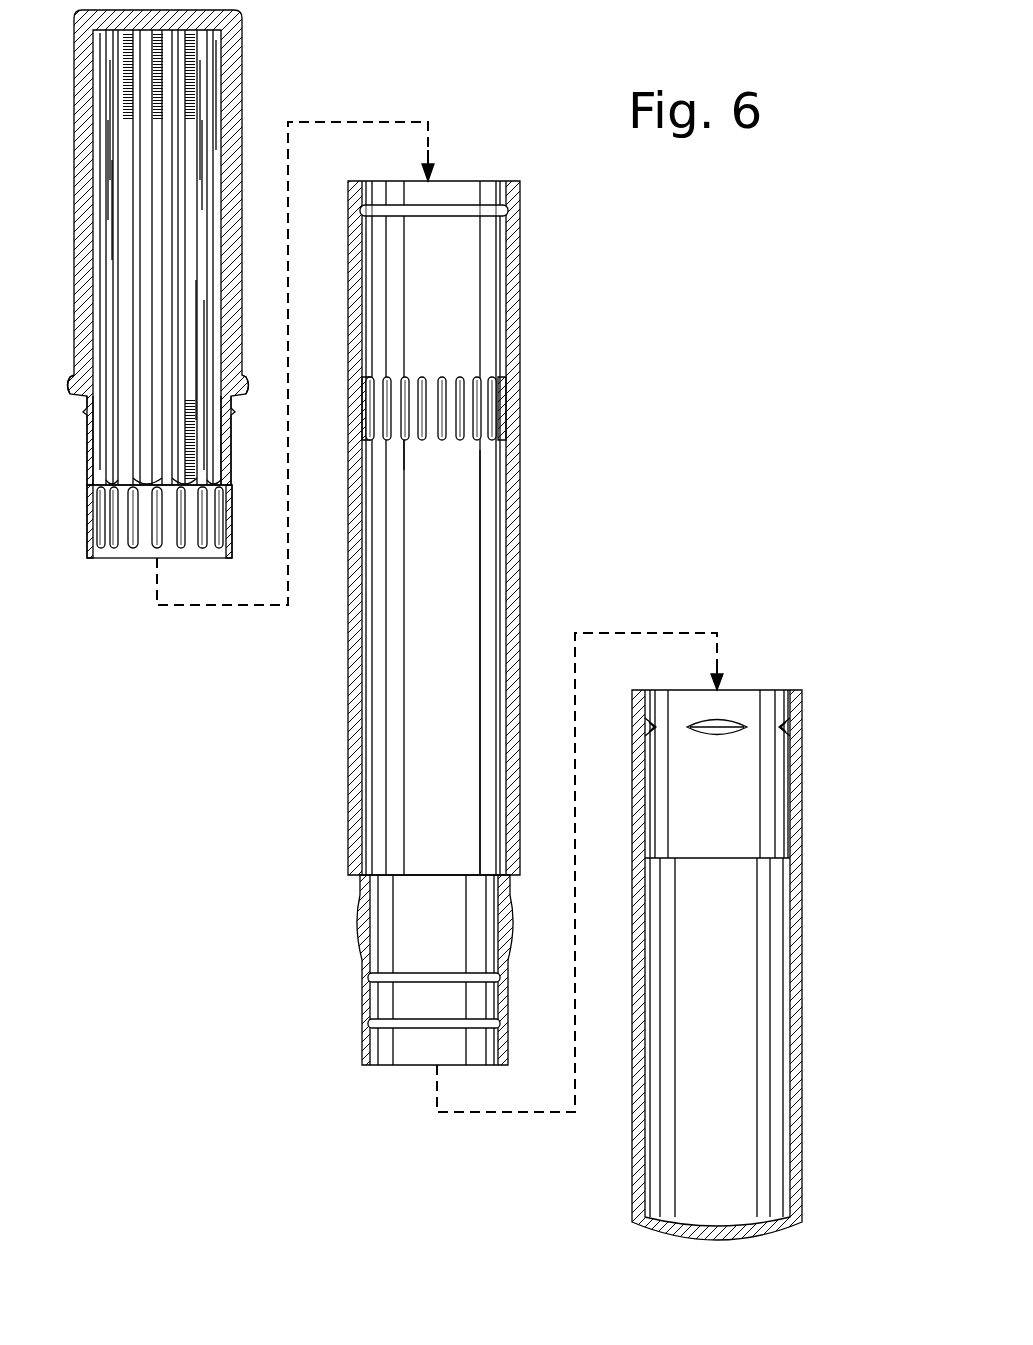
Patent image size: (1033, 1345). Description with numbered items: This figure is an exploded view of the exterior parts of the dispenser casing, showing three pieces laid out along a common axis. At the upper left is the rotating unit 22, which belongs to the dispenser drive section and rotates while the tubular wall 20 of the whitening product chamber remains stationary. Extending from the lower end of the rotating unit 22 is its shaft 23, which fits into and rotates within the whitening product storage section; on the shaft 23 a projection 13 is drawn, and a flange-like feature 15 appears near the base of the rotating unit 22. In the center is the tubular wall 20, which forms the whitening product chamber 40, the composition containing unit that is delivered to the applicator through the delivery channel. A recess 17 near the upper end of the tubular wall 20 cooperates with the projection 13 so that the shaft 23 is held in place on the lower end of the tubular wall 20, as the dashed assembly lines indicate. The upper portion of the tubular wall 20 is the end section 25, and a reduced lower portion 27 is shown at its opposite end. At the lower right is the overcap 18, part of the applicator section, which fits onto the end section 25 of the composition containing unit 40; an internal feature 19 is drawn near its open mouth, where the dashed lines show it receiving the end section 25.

The projection 13 is at (88, 416).
The cap flange 15 is at (68, 383).
The recess 17 is at (500, 212).
The overcap 18 is at (756, 935).
The housing notch 19 is at (802, 736).
The tubular wall 20 is at (453, 576).
The rotating unit 22 is at (203, 327).
The shaft 23 is at (88, 526).
The end section 25 is at (520, 262).
The barrel lower neck 27 is at (360, 1010).
The product chamber 40 is at (430, 783).